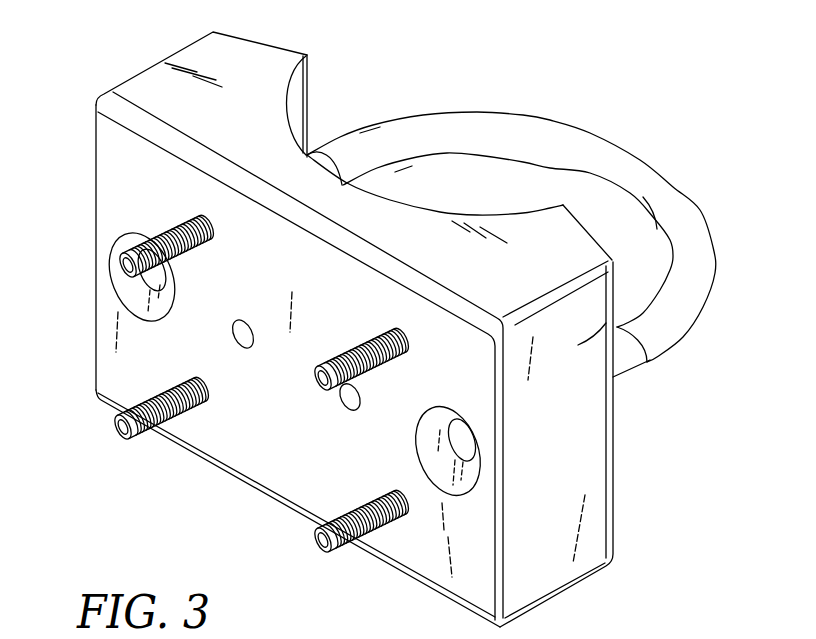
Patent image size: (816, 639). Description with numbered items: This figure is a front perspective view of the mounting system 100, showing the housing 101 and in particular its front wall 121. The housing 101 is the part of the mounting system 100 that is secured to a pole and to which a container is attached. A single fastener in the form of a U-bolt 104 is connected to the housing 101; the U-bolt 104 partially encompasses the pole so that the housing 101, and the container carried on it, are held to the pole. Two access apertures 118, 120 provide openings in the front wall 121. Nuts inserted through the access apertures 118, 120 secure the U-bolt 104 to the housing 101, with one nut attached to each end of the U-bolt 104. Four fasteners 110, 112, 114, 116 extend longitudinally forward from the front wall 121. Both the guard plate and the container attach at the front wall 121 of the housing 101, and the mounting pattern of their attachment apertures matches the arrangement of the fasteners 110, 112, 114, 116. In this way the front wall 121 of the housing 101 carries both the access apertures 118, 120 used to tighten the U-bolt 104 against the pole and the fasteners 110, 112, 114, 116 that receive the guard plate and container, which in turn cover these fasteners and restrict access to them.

The mounting system 100 is at (146, 93).
The housing 101 is at (583, 432).
The U-bolt 104 is at (652, 163).
The fastener 110 is at (165, 222).
The fastener 112 is at (123, 436).
The fastener 114 is at (352, 343).
The fastener 116 is at (343, 557).
The access aperture 118 is at (140, 288).
The access aperture 120 is at (478, 496).
The front wall 121 is at (250, 455).